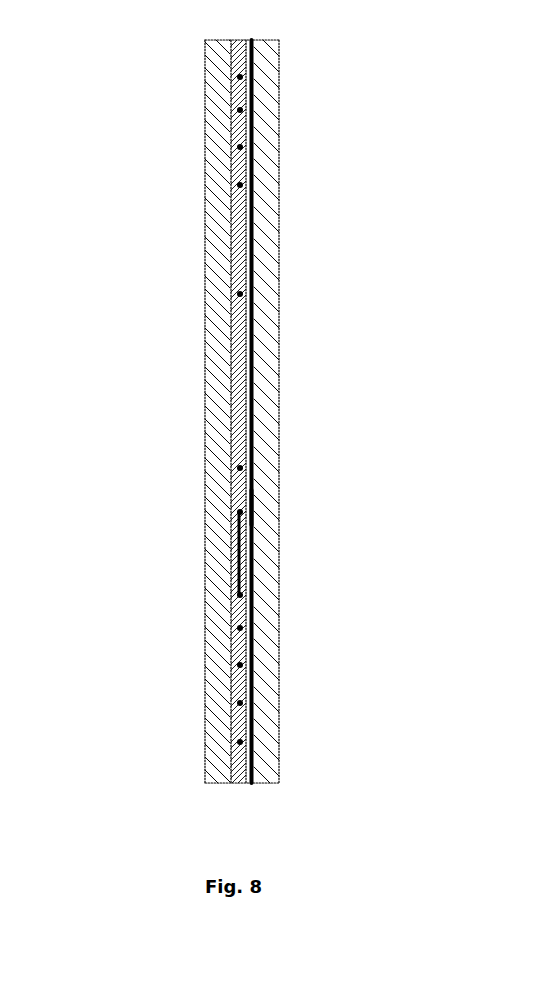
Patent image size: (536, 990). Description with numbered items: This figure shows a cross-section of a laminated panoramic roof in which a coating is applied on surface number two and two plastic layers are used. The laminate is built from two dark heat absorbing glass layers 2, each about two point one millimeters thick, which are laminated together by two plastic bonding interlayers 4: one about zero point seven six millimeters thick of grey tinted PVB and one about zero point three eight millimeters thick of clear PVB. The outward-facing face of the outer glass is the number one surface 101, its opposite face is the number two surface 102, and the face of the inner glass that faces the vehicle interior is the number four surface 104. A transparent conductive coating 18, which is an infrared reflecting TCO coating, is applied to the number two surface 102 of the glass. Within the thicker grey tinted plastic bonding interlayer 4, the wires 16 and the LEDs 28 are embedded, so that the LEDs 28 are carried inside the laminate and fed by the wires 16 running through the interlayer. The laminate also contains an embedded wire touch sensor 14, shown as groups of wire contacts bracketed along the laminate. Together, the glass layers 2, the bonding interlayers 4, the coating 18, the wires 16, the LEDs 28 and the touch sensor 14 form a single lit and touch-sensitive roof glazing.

The glass 2 is at (200, 380).
The plastic bonding interlayer 4 is at (224, 331).
The touch sensor 14 is at (240, 77).
The wire 16 is at (224, 294).
The transparent conductive coating 18 is at (264, 507).
The LED 28 is at (240, 550).
The number one surface 101 is at (289, 285).
The number two surface 102 is at (263, 200).
The number four surface 104 is at (199, 430).